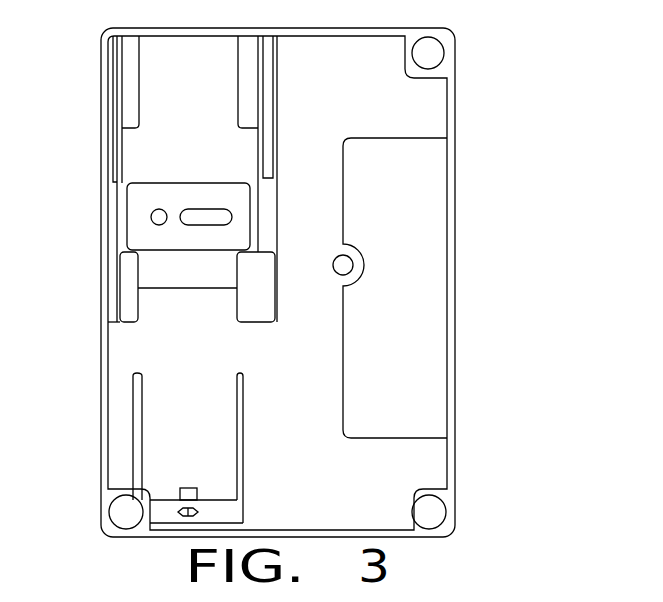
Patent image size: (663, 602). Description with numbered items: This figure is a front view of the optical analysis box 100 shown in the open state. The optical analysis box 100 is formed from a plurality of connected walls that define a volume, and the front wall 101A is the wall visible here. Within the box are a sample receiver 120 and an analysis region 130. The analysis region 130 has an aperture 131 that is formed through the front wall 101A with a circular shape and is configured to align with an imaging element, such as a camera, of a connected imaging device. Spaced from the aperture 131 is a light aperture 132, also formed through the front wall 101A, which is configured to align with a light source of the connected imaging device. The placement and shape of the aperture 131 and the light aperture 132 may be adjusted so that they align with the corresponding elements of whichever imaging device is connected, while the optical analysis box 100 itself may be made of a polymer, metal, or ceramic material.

The optical analysis box 100 is at (488, 116).
The front wall 101A is at (382, 123).
The sample receiver 120 is at (141, 328).
The analysis region 130 is at (186, 170).
The aperture 131 is at (151, 217).
The light aperture 132 is at (200, 227).